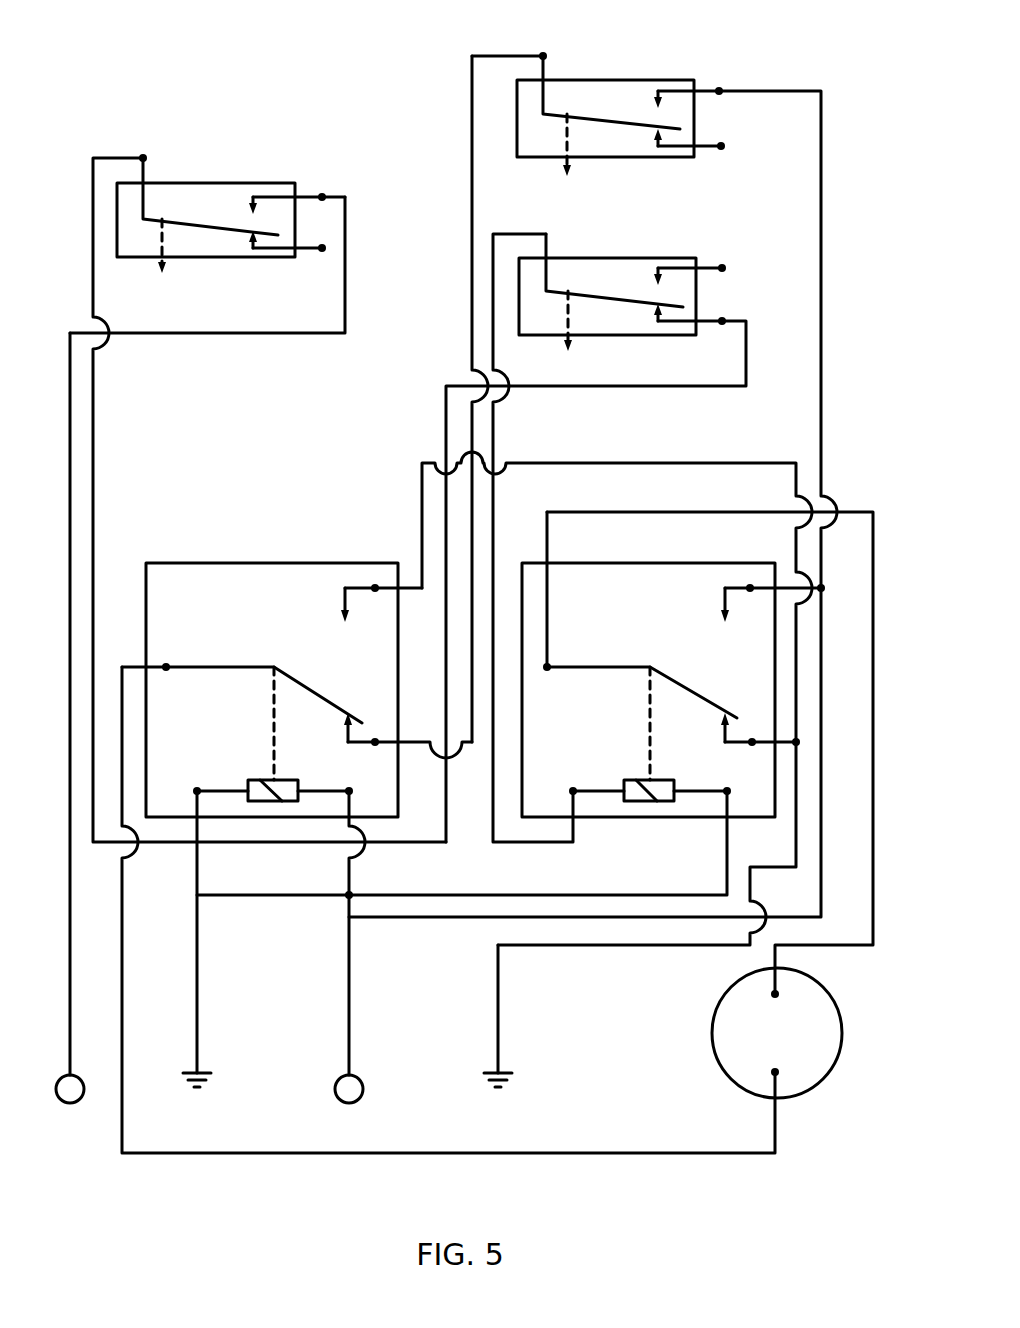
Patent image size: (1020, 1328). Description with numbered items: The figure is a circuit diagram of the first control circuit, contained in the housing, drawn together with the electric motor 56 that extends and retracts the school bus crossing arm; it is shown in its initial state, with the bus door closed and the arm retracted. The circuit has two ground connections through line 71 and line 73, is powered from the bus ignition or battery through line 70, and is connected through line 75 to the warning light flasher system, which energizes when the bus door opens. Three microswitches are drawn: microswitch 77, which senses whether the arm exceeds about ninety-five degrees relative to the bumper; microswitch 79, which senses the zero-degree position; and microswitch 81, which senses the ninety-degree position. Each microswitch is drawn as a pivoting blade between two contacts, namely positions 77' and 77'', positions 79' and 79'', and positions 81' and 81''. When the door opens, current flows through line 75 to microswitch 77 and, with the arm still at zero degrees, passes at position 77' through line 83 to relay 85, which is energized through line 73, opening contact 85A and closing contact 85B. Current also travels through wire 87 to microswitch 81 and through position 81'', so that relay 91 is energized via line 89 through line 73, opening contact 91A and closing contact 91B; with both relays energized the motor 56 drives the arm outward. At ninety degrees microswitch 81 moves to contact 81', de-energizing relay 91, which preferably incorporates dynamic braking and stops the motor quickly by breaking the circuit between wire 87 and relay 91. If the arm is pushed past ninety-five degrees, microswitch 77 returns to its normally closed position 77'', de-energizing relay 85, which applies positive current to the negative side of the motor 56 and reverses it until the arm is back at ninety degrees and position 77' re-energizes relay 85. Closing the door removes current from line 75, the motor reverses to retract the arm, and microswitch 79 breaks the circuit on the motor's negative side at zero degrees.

The electric motor 56 is at (842, 1030).
The line 70 is at (350, 998).
The line 71 is at (498, 1010).
The line 73 is at (199, 985).
The line 75 is at (70, 985).
The microswitch 77 is at (194, 236).
The position 77' is at (271, 204).
The position 77'' is at (259, 245).
The microswitch 79 is at (605, 99).
The position 79' is at (663, 100).
The position 79'' is at (664, 142).
The microswitch 81 is at (653, 292).
The contact 81' is at (665, 278).
The position 81'' is at (666, 319).
The line 83 is at (93, 483).
The relay 85 is at (266, 563).
The contact 85A is at (378, 735).
The contact 85B is at (350, 603).
The wire 87 is at (707, 386).
The line 89 is at (495, 427).
The relay 91 is at (640, 563).
The contact 91A is at (731, 730).
The contact 91B is at (742, 603).